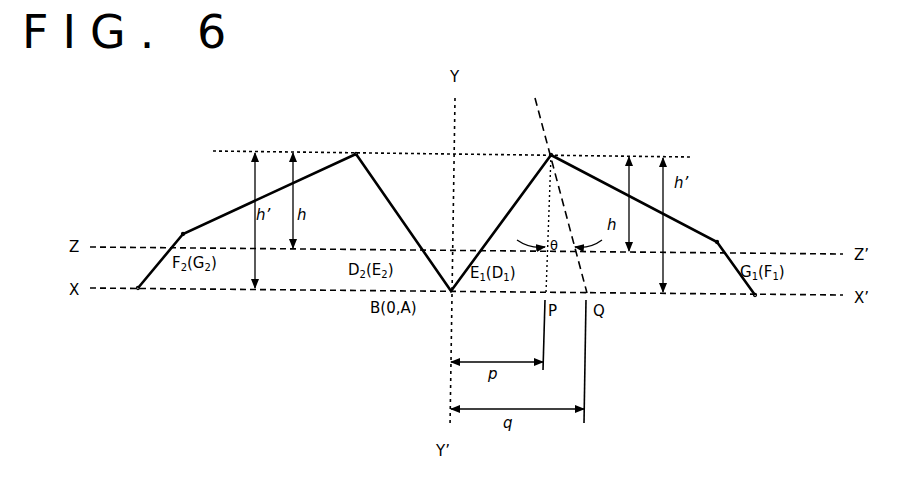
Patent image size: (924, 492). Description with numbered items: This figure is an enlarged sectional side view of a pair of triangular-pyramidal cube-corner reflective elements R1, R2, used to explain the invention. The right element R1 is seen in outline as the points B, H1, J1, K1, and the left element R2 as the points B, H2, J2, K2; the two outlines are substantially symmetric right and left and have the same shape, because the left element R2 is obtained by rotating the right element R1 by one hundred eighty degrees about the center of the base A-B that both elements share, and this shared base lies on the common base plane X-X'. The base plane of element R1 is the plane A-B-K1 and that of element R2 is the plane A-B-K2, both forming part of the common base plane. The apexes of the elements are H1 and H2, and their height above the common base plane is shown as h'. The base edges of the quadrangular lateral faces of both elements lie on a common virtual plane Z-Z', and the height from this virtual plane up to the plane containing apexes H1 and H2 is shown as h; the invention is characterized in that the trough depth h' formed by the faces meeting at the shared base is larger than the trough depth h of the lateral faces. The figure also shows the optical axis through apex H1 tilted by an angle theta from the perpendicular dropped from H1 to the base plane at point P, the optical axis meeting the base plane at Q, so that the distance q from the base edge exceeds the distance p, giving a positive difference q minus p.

The right triangular-pyramidal reflective element R1 is at (679, 236).
The left triangular-pyramidal reflective element R2 is at (224, 226).
The apex of reflective element R1 H1 is at (560, 146).
The apex of reflective element R2 H2 is at (345, 144).
The lateral-face vertex of element R1 J1 is at (723, 231).
The lateral-face vertex of element R2 J2 is at (171, 225).
The base-plane vertex of element R1 K1 is at (763, 310).
The base-plane vertex of element R2 K2 is at (134, 301).
The base edge end point B is at (453, 222).